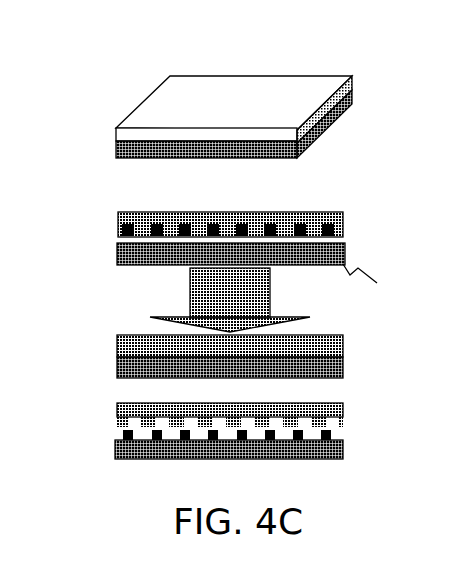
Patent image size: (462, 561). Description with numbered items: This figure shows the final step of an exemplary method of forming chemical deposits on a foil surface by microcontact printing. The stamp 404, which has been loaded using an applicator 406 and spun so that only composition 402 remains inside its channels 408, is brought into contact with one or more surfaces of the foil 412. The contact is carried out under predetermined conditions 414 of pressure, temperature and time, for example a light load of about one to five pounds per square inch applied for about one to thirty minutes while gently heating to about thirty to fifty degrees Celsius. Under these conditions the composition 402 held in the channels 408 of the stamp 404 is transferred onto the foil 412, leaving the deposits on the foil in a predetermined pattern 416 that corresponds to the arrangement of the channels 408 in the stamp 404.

The composition 402 is at (345, 225).
The stamp 404 is at (318, 84).
The applicator 406 is at (310, 217).
The channels 408 is at (127, 416).
The foil 412 is at (320, 138).
The predetermined conditions 414 is at (277, 298).
The predetermined pattern 416 is at (118, 432).